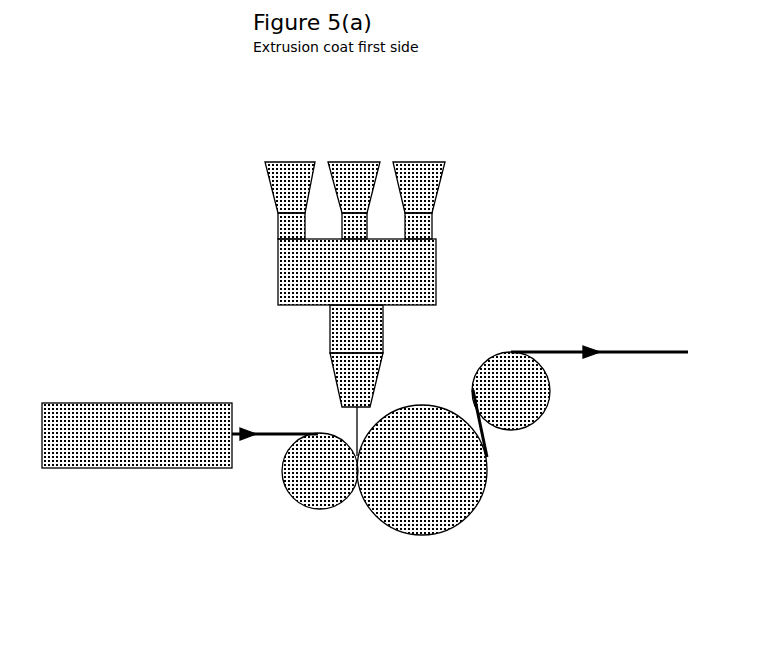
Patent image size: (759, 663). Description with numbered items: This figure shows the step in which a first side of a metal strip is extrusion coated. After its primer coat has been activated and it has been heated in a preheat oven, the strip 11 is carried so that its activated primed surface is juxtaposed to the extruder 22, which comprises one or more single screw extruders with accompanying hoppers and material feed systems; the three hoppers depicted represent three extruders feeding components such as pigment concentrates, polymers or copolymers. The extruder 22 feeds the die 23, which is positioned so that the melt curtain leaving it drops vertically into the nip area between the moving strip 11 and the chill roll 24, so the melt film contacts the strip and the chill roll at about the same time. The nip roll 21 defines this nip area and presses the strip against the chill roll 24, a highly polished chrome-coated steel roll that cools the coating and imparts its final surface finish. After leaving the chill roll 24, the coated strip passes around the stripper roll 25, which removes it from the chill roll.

The strip 11 is at (182, 403).
The nip roll 21 is at (283, 470).
The extruder 22 is at (278, 272).
The die 23 is at (345, 382).
The chill roll 24 is at (475, 508).
The stripper roll 25 is at (538, 417).